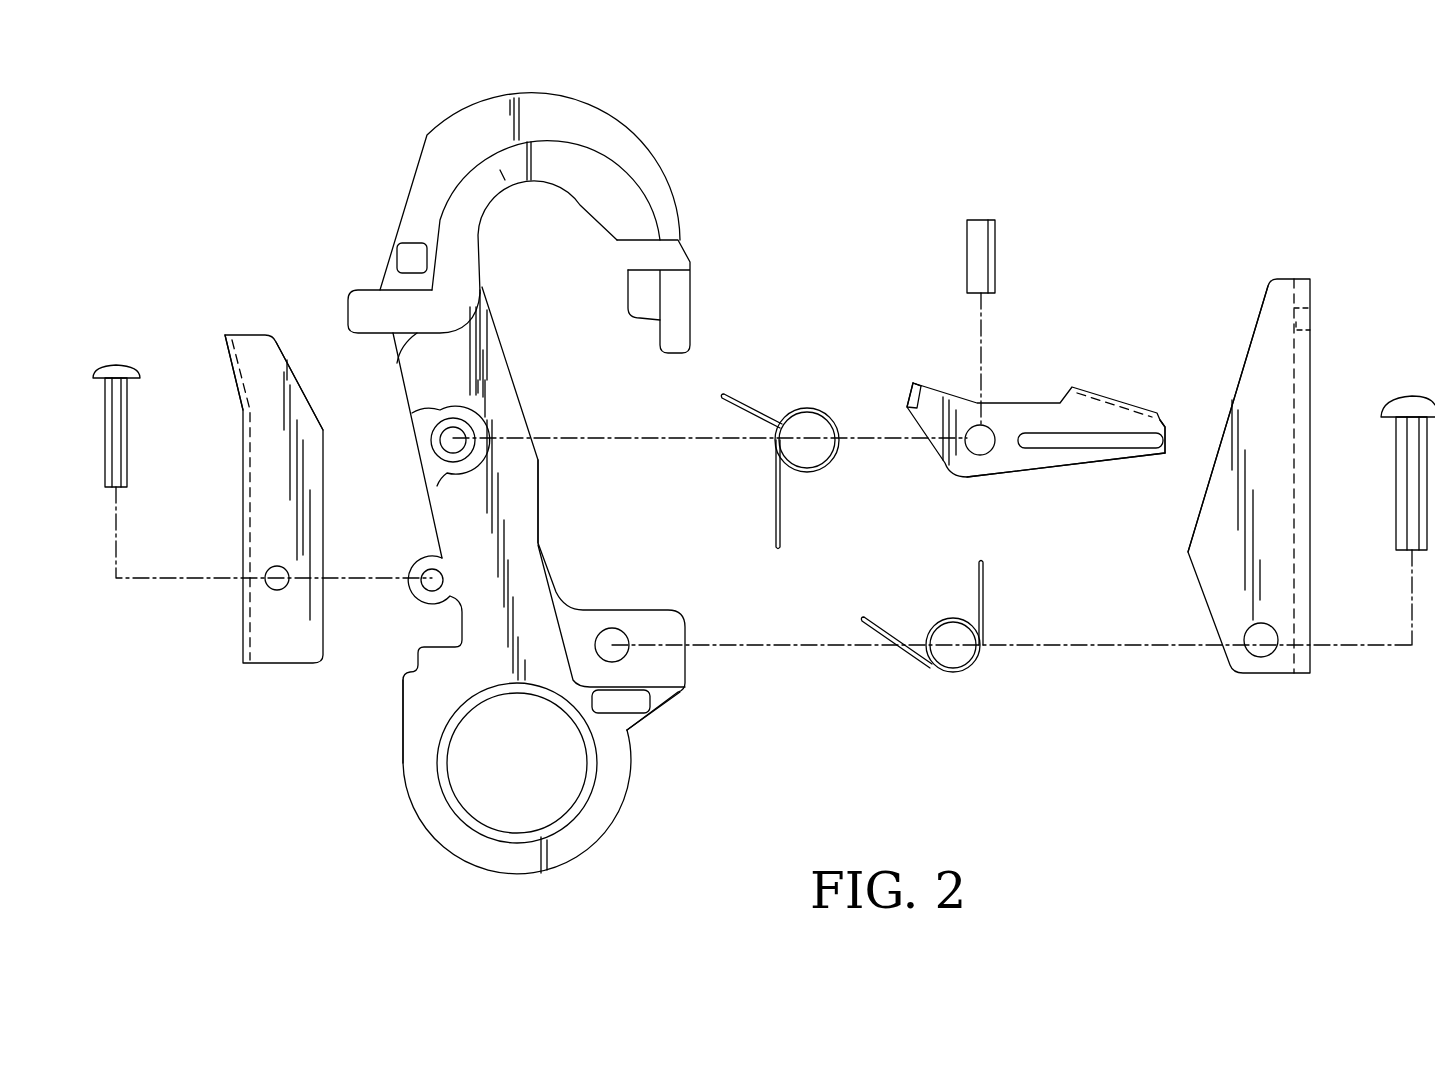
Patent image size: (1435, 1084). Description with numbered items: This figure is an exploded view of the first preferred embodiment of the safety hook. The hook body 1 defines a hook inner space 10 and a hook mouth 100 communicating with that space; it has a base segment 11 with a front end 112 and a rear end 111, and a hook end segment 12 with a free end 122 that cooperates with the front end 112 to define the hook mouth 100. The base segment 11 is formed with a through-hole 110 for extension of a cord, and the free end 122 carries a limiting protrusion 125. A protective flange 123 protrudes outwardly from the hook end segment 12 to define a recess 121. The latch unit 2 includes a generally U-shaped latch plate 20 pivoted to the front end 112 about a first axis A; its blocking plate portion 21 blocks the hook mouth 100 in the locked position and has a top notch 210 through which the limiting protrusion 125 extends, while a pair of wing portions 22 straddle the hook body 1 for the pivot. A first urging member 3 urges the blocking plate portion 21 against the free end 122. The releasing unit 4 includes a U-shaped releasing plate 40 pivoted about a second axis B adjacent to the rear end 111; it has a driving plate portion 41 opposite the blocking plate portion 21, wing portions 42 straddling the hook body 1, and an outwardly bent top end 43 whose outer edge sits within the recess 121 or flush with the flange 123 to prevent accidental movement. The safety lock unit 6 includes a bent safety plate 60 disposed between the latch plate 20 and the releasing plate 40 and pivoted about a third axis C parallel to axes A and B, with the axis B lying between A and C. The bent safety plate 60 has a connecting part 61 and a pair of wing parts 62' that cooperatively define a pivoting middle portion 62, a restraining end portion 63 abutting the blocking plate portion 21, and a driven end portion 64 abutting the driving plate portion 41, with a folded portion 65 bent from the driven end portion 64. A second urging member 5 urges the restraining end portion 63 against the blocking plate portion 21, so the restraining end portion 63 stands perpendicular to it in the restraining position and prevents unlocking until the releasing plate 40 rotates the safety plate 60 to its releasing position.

The hook body 1 is at (425, 855).
The hook inner space 10 is at (562, 267).
The base segment 11 is at (400, 778).
The hook end segment 12 is at (425, 132).
The hook mouth 100 is at (693, 540).
The through-hole 110 is at (540, 775).
The rear end 111 is at (403, 703).
The front end 112 is at (655, 713).
The recess 121 is at (397, 358).
The free end 122 is at (692, 337).
The protective flange 123 is at (348, 320).
The limiting protrusion 125 is at (637, 305).
The first axis A is at (612, 640).
The second axis B is at (428, 578).
The third axis C is at (440, 440).
The latch unit 2 is at (1322, 272).
The latch plate 20 is at (1280, 270).
The blocking plate portion 21 is at (1310, 340).
The top notch 210 is at (1312, 310).
The wing portions 22 is at (1268, 345).
The first urging member 3 is at (980, 667).
The releasing unit 4 is at (228, 675).
The releasing plate 40 is at (272, 668).
The driving plate portion 41 is at (243, 612).
The wing portions 42 is at (268, 508).
The top end 43 is at (228, 360).
The second urging member 5 is at (830, 478).
The safety lock unit 6 is at (1037, 378).
The bent safety plate 60 is at (1080, 470).
The connecting part 61 is at (1113, 400).
The pivoting middle portion 62 is at (996, 337).
The wing parts 62' is at (1066, 494).
The restraining end portion 63 is at (1165, 428).
The driven end portion 64 is at (905, 407).
The folded portion 65 is at (910, 382).